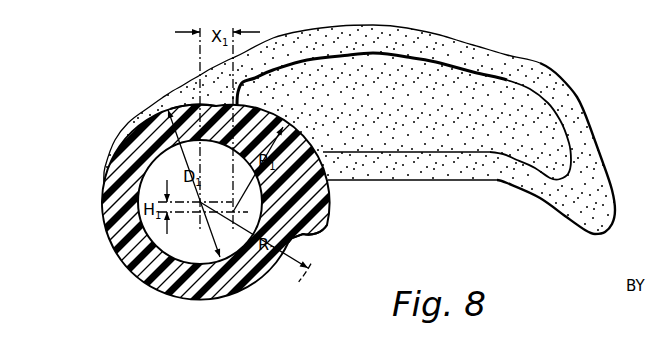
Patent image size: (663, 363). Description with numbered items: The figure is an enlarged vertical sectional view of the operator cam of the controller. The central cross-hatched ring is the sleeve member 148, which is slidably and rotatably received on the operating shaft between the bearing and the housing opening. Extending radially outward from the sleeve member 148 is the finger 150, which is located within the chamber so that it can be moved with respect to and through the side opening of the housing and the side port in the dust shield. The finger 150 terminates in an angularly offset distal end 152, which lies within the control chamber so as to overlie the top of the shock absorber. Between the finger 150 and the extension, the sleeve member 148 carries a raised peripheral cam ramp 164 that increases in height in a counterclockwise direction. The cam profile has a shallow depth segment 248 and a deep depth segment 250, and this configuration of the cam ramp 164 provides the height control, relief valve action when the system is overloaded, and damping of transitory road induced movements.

The finger 150 is at (408, 67).
The angularly offset distal end 152 is at (583, 183).
The raised peripheral cam ramp 164 is at (325, 126).
The sleeve member 148 is at (247, 300).
The deep depth segment of the cam profile 250 is at (330, 194).
The shallow depth segment of the cam profile 248 is at (197, 104).